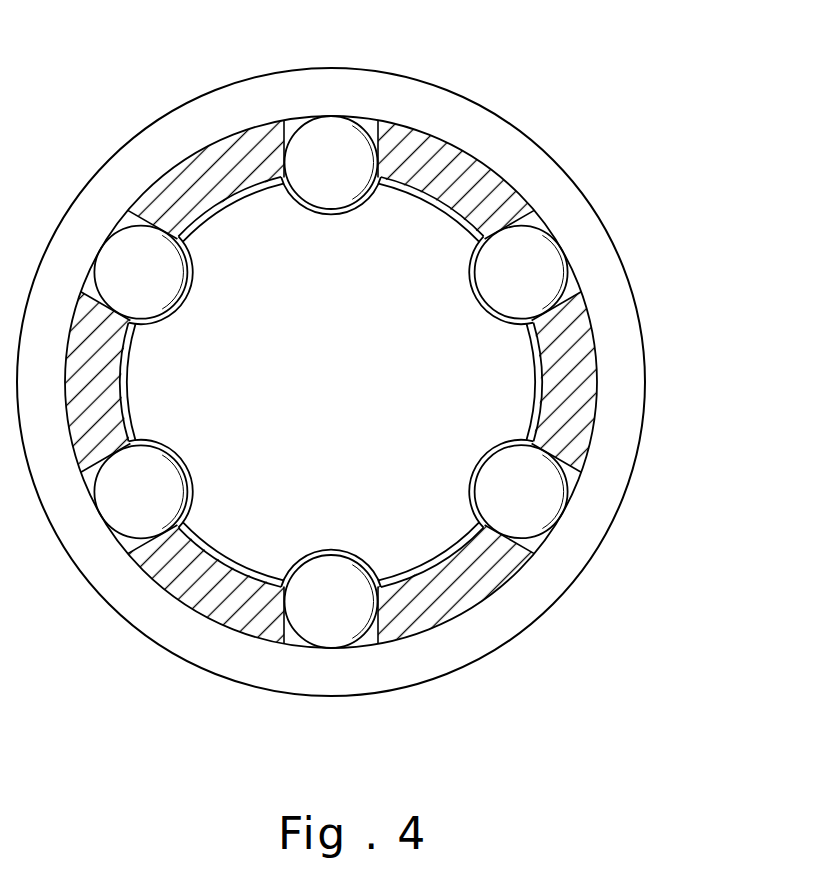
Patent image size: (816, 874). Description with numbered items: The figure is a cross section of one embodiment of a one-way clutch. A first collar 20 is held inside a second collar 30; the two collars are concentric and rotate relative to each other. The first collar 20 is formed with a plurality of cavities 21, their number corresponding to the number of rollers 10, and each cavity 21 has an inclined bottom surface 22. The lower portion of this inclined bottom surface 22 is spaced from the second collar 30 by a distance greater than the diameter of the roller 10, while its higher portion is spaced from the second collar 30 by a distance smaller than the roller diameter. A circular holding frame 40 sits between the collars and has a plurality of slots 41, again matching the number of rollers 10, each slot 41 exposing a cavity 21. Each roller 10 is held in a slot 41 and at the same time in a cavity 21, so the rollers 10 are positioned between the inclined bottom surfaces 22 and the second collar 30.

The roller 10 is at (515, 280).
The first collar 20 is at (393, 342).
The cavity 21 is at (510, 320).
The inclined bottom surface 22 is at (463, 252).
The second collar 30 is at (467, 127).
The circular holding frame 40 is at (386, 323).
The slot 41 is at (568, 285).